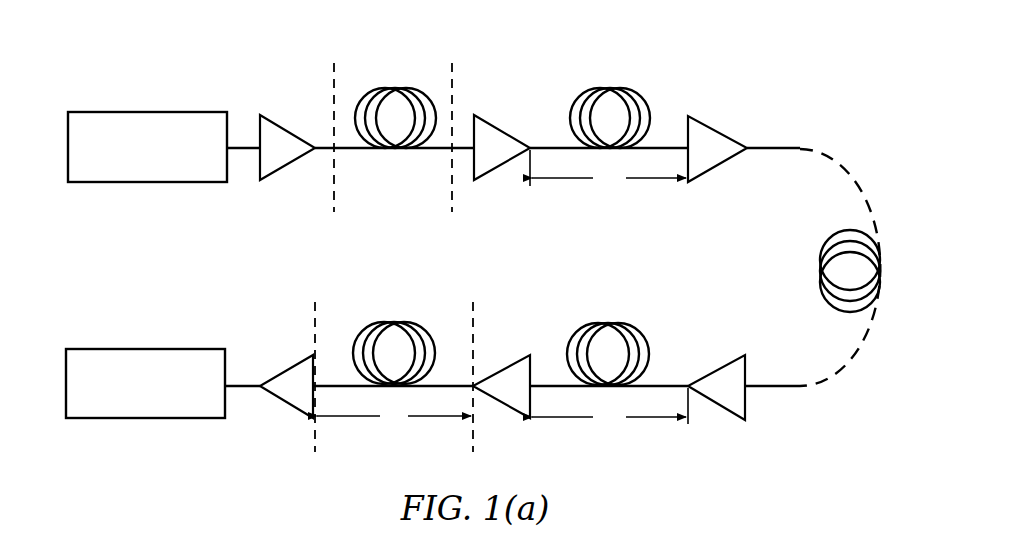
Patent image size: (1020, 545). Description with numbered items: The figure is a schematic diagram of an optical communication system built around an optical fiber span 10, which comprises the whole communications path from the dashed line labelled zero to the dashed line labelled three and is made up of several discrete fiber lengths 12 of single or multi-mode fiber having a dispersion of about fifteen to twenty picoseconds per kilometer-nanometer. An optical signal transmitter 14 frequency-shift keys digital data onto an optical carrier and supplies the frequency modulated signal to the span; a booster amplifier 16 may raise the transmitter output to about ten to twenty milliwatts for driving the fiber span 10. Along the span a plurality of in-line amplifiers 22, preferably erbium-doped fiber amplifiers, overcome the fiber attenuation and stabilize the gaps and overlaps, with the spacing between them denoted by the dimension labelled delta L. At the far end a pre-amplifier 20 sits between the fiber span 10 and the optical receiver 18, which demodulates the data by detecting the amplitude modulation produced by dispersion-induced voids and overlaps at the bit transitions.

The optical fiber span 10 is at (788, 75).
The discrete fiber lengths 12 is at (398, 88).
The optical signal transmitter 14 is at (154, 112).
The booster amplifier 16 is at (290, 126).
The optical receiver 18 is at (153, 349).
The pre-amplifier 20 is at (300, 355).
The in-line amplifiers 22 is at (505, 121).